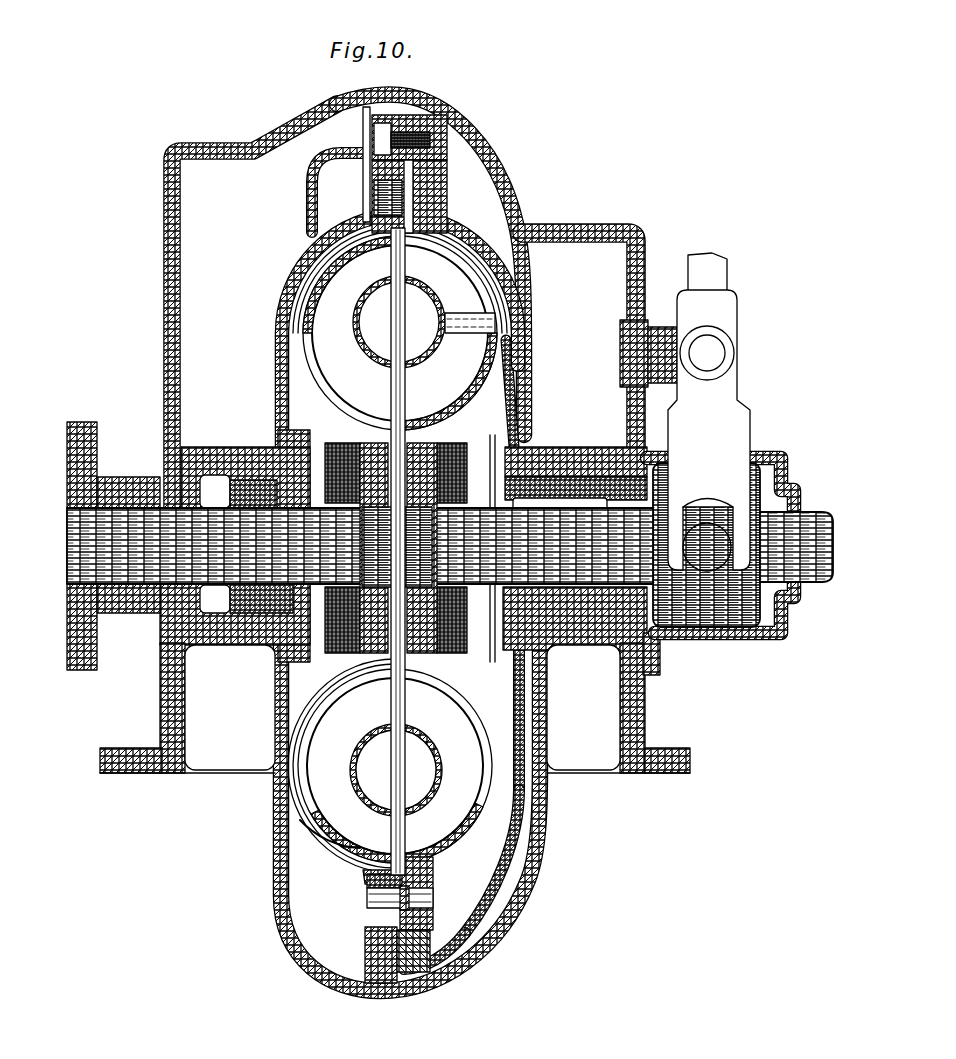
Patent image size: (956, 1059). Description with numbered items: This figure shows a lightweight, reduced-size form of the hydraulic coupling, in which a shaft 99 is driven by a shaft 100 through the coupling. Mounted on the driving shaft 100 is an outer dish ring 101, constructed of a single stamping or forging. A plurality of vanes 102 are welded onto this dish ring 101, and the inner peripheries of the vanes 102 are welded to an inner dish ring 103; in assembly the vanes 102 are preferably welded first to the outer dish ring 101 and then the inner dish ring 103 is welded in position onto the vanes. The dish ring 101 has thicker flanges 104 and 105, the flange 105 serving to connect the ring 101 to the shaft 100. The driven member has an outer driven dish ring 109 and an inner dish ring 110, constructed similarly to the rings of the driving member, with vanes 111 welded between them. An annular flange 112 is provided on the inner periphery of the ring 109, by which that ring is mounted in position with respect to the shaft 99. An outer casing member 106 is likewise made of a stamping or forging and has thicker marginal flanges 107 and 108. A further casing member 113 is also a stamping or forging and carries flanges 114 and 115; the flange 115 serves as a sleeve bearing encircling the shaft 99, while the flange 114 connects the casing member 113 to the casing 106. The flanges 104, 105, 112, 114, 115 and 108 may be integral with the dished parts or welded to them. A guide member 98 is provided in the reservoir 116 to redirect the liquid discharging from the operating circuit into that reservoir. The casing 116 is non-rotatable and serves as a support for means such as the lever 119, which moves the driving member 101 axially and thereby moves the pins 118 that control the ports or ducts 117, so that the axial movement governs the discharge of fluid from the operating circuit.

The guide member 98 is at (313, 184).
The shaft 99 is at (76, 548).
The shaft 100 is at (808, 515).
The outer dish ring 101 is at (477, 820).
The vanes 102 is at (457, 753).
The inner dish ring 103 is at (428, 797).
The flange 104 is at (419, 658).
The flange 105 is at (433, 927).
The outer casing member 106 is at (478, 902).
The marginal flange 107 is at (420, 952).
The marginal flange 108 is at (518, 655).
The outer driven dish ring 109 is at (313, 813).
The inner dish ring 110 is at (348, 758).
The vanes 111 is at (340, 710).
The annular flange 112 is at (347, 650).
The casing member 113 is at (292, 787).
The flange 114 is at (373, 945).
The flange 115 is at (300, 633).
The casing 116 is at (524, 201).
The ports or ducts 117 is at (377, 880).
The pins 118 is at (370, 900).
The lever 119 is at (716, 410).